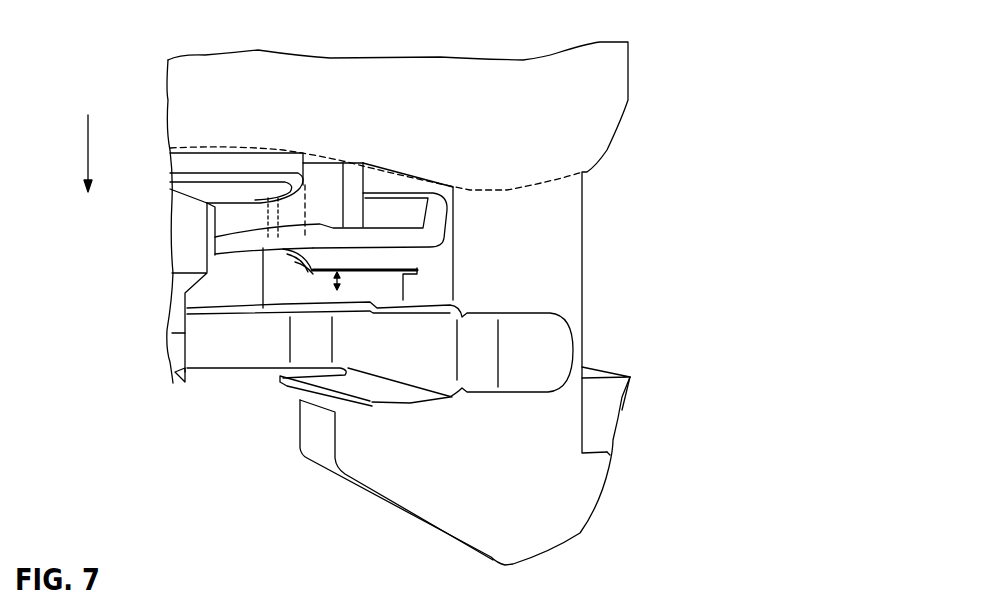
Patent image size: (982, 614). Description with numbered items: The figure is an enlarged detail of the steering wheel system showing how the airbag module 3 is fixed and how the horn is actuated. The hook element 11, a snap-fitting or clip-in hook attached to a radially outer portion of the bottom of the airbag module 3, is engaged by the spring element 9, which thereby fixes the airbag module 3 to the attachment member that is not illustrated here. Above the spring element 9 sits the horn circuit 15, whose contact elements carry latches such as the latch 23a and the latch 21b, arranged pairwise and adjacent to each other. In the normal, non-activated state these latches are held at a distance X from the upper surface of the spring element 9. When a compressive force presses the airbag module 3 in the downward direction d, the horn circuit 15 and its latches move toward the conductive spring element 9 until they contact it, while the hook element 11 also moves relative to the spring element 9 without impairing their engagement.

The airbag module 3 is at (577, 103).
The horn circuit 15 is at (342, 249).
The latch 23a is at (410, 258).
The spring element 9 is at (527, 335).
The hook element 11 is at (533, 490).
The distance X is at (333, 286).
The downward direction d is at (88, 150).
The latch 21b is at (363, 609).